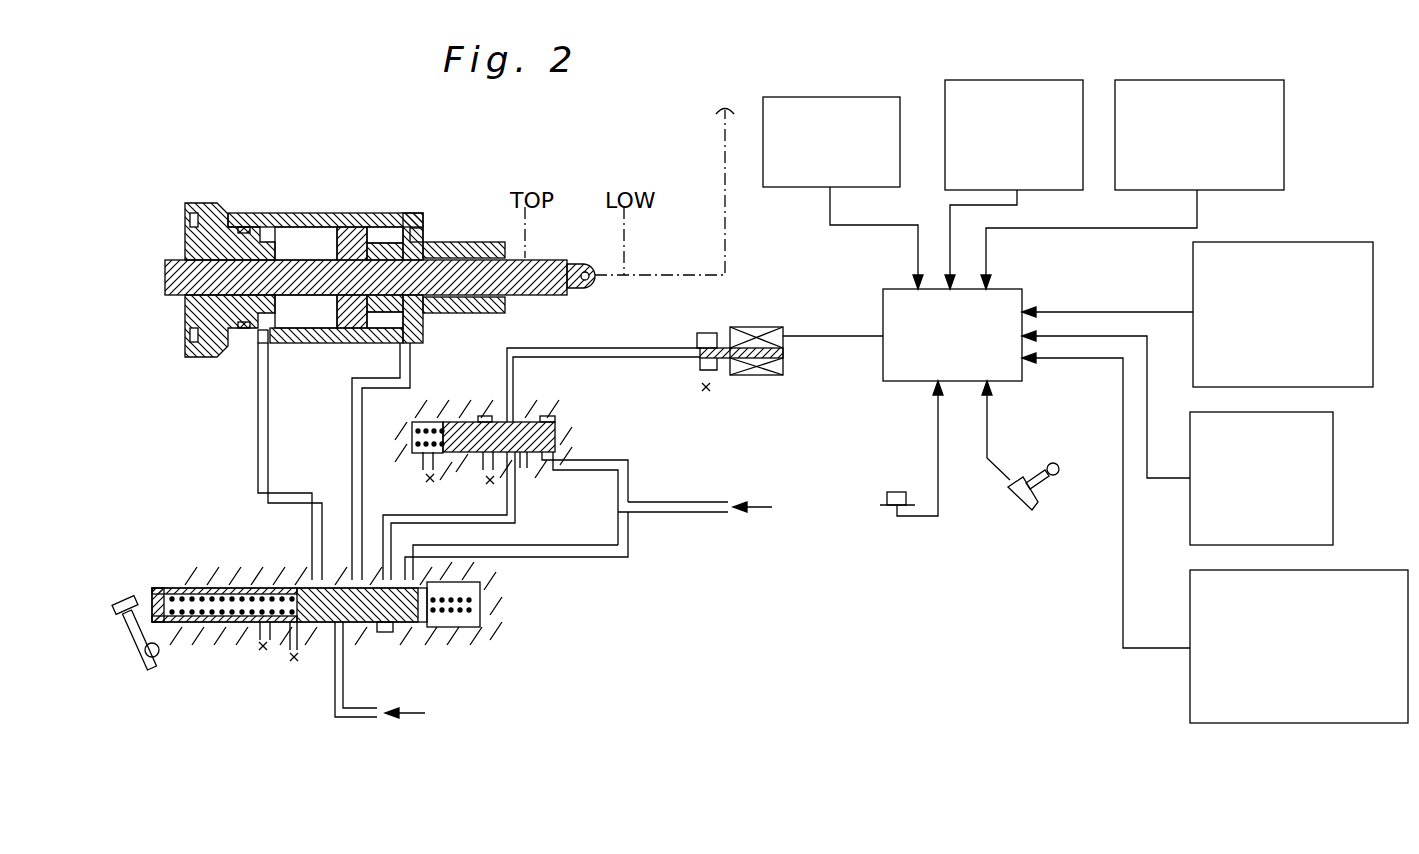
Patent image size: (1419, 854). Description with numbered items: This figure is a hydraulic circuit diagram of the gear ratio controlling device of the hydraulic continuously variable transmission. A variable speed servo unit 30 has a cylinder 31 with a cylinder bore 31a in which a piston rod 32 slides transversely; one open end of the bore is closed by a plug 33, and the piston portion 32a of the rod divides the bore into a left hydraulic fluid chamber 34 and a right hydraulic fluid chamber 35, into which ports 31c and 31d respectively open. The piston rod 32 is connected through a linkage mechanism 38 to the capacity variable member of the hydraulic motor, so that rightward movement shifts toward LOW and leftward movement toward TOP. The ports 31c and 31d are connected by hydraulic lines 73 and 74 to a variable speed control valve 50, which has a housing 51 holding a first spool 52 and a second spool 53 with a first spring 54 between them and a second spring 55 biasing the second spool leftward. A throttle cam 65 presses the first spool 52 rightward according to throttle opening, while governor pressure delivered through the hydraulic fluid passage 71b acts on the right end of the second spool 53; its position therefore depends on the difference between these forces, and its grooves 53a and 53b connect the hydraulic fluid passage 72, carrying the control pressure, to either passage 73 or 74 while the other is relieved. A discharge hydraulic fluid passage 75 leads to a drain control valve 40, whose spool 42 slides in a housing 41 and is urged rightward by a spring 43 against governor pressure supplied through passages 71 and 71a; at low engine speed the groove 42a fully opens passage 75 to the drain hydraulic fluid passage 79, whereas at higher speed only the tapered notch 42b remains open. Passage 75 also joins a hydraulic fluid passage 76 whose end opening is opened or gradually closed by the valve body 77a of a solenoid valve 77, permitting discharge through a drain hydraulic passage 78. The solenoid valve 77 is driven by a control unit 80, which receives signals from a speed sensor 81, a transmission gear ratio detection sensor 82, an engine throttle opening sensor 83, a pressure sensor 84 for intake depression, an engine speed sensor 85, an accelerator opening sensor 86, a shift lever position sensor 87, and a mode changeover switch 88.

The variable speed servo unit 30 is at (258, 185).
The cylinder 31 is at (370, 220).
The cylinder bore 31a is at (300, 228).
The port 31c is at (260, 358).
The port 31d is at (397, 343).
The piston rod 32 is at (448, 263).
The piston portion 32a is at (367, 248).
The plug 33 is at (197, 303).
The left hydraulic fluid chamber 34 is at (288, 243).
The right hydraulic fluid chamber 35 is at (423, 228).
The linkage mechanism 38 is at (735, 215).
The drain control valve 40 is at (586, 404).
The housing 41 is at (522, 457).
The spool 42 is at (537, 448).
The groove 42a is at (503, 422).
The tapered notch 42b is at (517, 426).
The spring 43 is at (425, 427).
The variable speed control valve 50 is at (215, 672).
The housing 51 is at (287, 573).
The first spool 52 is at (170, 585).
The second spool 53 is at (400, 632).
The groove 53a is at (318, 635).
The groove 53b is at (352, 628).
The first spring 54 is at (230, 626).
The second spring 55 is at (473, 627).
The throttle cam 65 is at (138, 633).
The hydraulic fluid passage 71 is at (695, 517).
The hydraulic fluid passage 71a is at (577, 472).
The hydraulic fluid passage 71b is at (552, 557).
The hydraulic fluid passage 72 is at (335, 695).
The hydraulic line 73 is at (258, 455).
The hydraulic line 74 is at (352, 433).
The discharge hydraulic fluid passage 75 is at (443, 515).
The hydraulic fluid passage 76 is at (583, 347).
The solenoid valve 77 is at (757, 327).
The valve body 77a is at (700, 362).
The drain hydraulic passage 78 is at (713, 372).
The drain hydraulic fluid passage 79 is at (487, 458).
The control unit 80 is at (885, 289).
The speed sensor 81 is at (793, 97).
The transmission gear ratio detection sensor 82 is at (978, 80).
The engine throttle opening sensor 83 is at (1165, 80).
The pressure sensor 84 is at (1282, 242).
The engine speed sensor 85 is at (1333, 430).
The accelerator opening sensor 86 is at (1340, 570).
The shift lever position sensor 87 is at (1040, 507).
The mode changeover switch 88 is at (897, 492).